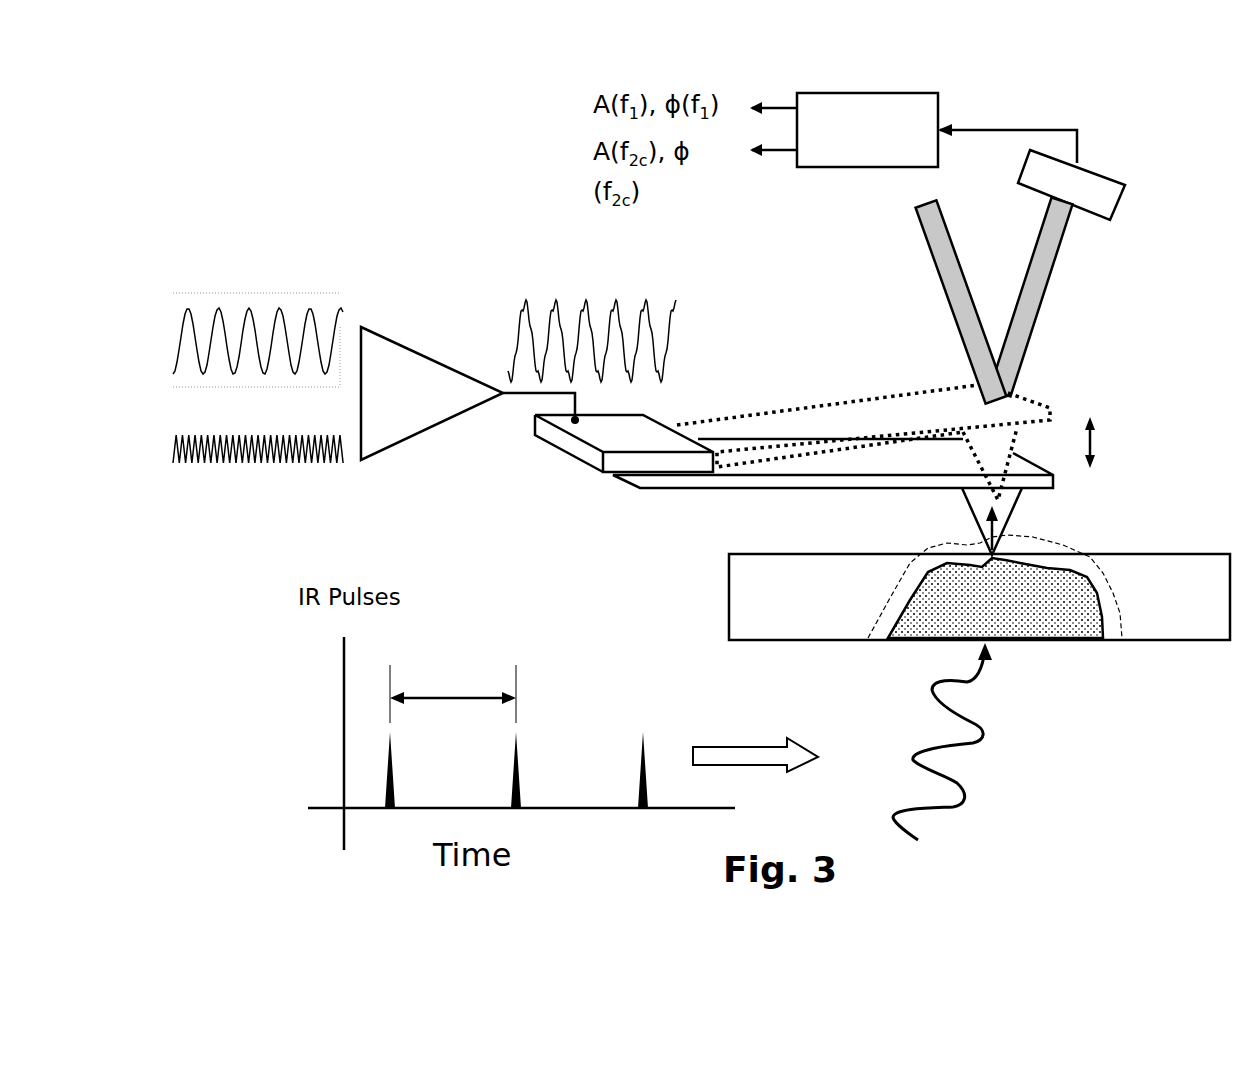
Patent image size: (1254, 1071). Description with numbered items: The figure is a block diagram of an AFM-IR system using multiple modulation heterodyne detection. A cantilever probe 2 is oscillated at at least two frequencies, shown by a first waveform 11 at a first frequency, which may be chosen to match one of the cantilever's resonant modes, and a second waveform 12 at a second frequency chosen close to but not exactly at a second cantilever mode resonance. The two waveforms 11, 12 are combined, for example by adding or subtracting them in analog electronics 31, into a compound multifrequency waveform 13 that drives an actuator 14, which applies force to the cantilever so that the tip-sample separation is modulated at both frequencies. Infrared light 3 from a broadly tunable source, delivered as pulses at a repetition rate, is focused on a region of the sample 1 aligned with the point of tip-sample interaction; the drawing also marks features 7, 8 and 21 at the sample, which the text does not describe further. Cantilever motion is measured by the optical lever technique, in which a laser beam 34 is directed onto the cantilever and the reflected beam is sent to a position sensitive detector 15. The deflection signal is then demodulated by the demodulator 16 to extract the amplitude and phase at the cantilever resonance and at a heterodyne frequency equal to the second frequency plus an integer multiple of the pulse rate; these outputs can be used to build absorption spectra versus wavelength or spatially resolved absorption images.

The sample 1 is at (1053, 645).
The cantilever probe 2 is at (842, 405).
The light 3 is at (927, 695).
The thermally expanded region 7 is at (1010, 517).
The absorbing region of sample 8 is at (1000, 550).
The waveform 11 is at (234, 318).
The waveform 12 is at (234, 471).
The compound waveform 13 is at (592, 321).
The actuator 14 is at (603, 449).
The position sensitive detector 15 is at (1093, 186).
The demodulator 16 is at (913, 130).
The sample region 21 is at (910, 602).
The analog electronics 31 is at (470, 393).
The laser beam 34 is at (975, 301).